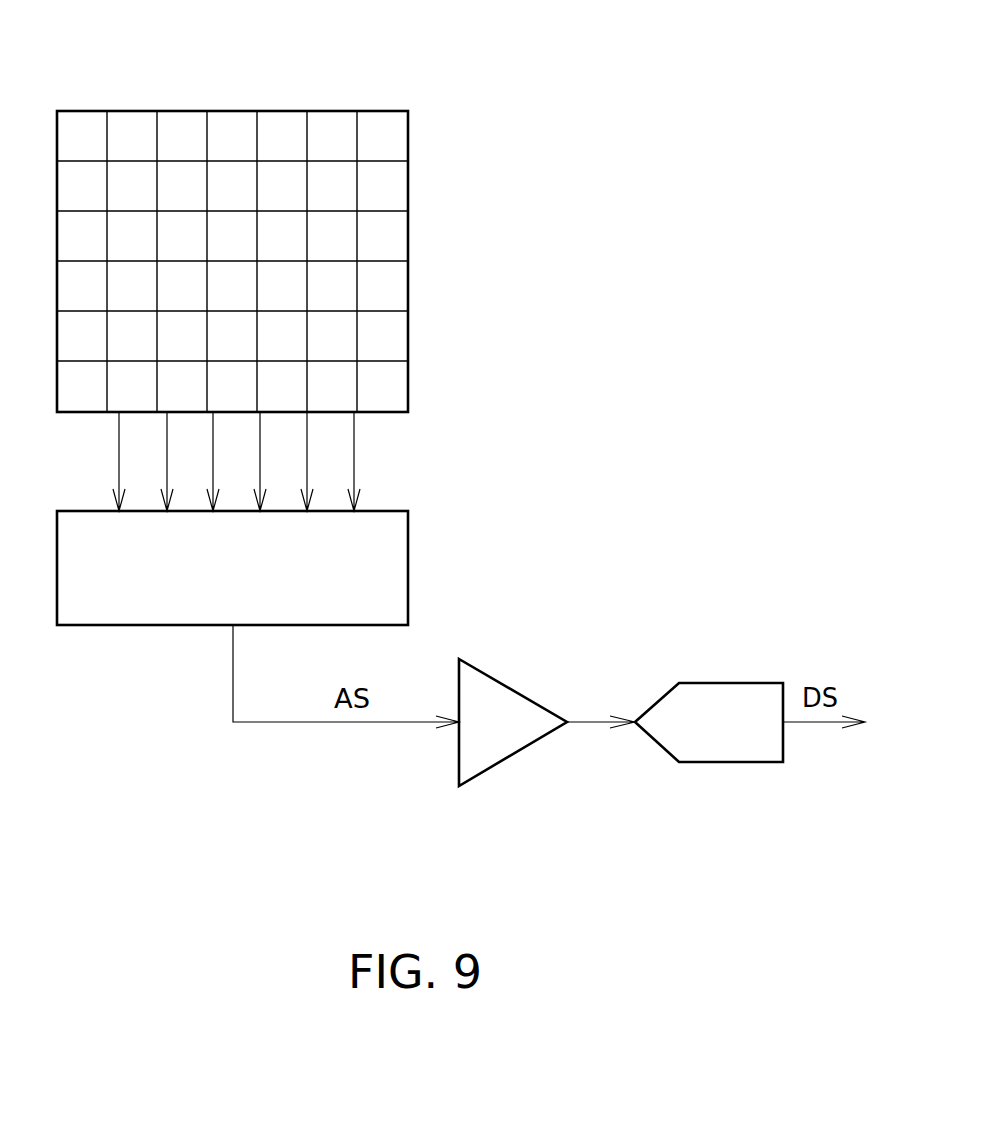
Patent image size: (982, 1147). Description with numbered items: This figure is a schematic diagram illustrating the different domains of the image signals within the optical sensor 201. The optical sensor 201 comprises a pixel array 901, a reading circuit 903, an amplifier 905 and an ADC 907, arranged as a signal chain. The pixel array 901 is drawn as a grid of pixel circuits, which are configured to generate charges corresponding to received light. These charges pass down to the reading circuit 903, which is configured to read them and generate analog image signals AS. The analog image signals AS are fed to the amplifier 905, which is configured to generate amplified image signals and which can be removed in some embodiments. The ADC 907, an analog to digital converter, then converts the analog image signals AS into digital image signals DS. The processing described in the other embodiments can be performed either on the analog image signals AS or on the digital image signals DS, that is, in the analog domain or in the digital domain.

The optical sensor 201 is at (683, 75).
The pixel array 901 is at (415, 103).
The reading circuit 903 is at (408, 543).
The amplifier 905 is at (507, 682).
The ADC (Analog to Digital Converter) 907 is at (715, 683).